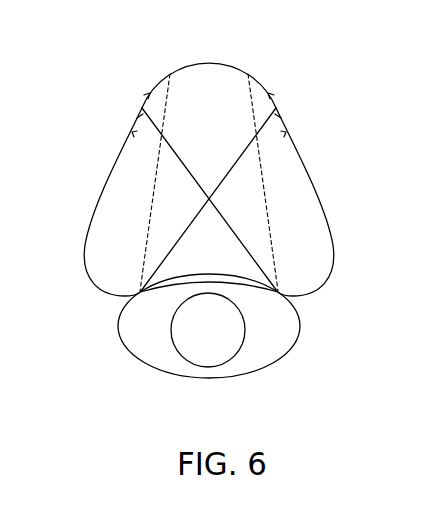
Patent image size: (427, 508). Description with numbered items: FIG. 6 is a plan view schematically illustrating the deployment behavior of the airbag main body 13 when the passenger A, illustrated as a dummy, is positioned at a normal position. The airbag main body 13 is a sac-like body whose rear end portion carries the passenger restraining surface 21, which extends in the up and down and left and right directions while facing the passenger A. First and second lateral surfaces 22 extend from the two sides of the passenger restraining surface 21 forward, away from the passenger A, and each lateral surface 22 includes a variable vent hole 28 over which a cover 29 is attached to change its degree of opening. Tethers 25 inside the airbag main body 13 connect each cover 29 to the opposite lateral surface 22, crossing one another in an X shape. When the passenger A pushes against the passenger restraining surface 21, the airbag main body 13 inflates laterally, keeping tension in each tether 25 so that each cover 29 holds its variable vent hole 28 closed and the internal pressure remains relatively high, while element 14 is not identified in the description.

The airbag main body 13 is at (240, 70).
The outer peripheral edge 14 is at (214, 61).
The passenger restraining surface 21 is at (255, 287).
The lateral surfaces 22 is at (98, 212).
The tether 25 is at (158, 129).
The variable vent hole 28 is at (142, 104).
The cover 29 is at (140, 117).
The passenger A is at (208, 379).